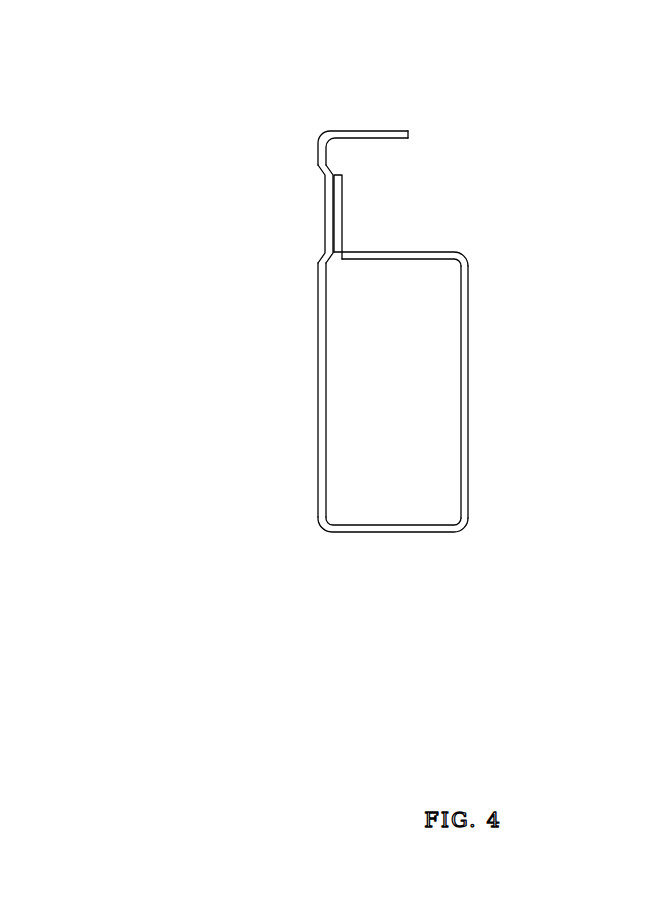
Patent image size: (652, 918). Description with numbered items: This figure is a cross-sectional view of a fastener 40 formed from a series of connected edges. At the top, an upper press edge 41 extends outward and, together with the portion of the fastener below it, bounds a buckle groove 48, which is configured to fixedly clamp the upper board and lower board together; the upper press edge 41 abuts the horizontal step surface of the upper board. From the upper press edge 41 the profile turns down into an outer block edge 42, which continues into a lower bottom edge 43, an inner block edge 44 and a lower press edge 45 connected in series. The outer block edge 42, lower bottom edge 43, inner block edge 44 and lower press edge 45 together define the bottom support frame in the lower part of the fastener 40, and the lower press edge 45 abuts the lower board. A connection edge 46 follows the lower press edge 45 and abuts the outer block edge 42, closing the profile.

The fastener 40 is at (372, 419).
The upper press edge 41 is at (372, 131).
The outer block edge 42 is at (320, 292).
The lower bottom edge 43 is at (393, 527).
The inner block edge 44 is at (466, 390).
The lower press edge 45 is at (410, 255).
The connection edge 46 is at (338, 201).
The buckle groove 48 is at (367, 198).